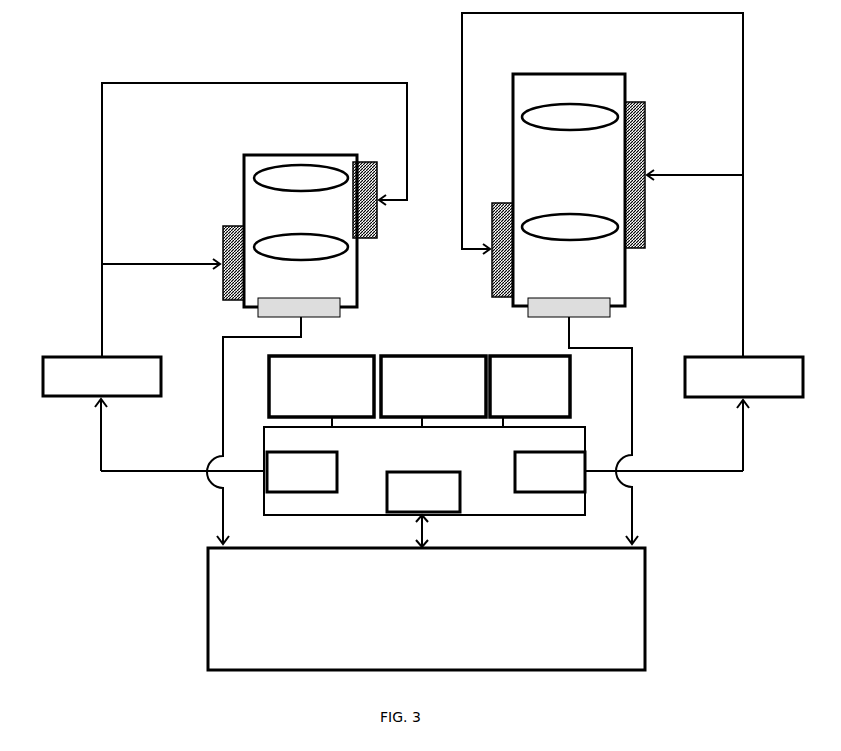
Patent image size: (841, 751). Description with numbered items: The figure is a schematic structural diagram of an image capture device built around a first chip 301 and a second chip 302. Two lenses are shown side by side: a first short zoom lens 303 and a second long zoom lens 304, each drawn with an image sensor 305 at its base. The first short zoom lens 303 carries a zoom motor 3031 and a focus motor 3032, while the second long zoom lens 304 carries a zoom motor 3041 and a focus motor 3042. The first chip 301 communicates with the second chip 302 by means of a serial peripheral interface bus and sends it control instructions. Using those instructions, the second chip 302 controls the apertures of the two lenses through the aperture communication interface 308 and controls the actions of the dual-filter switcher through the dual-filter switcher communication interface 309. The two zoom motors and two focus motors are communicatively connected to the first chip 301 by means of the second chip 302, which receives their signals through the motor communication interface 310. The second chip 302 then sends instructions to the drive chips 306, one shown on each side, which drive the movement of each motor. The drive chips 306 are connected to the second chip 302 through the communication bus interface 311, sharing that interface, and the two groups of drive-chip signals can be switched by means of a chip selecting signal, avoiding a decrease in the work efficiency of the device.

The first chip 301 is at (208, 615).
The second chip 302 is at (585, 443).
The first short zoom lens 303 is at (286, 155).
The zoom motor 3031 is at (411, 234).
The focus motor 3032 is at (223, 300).
The second long zoom lens 304 is at (583, 55).
The zoom motor 3041 is at (647, 123).
The focus motor 3042 is at (492, 297).
The image sensor 305 is at (332, 298).
The drive chip 306 is at (162, 377).
The aperture communication interface 308 is at (321, 386).
The dual-filter switcher communication interface 309 is at (433, 386).
The motor communication interface 310 is at (530, 386).
The communication bus interface 311 is at (426, 482).